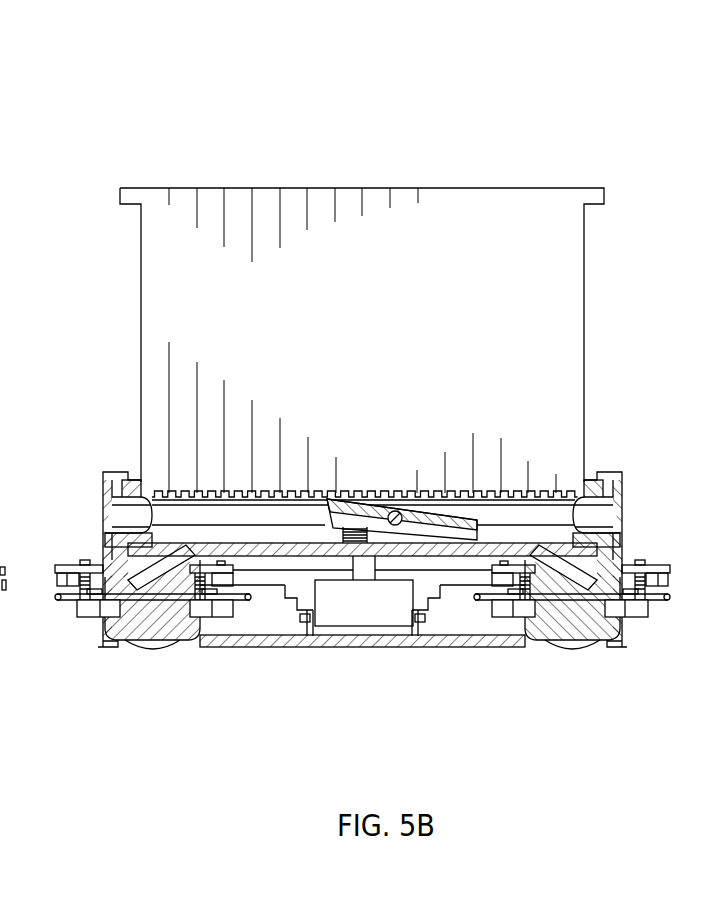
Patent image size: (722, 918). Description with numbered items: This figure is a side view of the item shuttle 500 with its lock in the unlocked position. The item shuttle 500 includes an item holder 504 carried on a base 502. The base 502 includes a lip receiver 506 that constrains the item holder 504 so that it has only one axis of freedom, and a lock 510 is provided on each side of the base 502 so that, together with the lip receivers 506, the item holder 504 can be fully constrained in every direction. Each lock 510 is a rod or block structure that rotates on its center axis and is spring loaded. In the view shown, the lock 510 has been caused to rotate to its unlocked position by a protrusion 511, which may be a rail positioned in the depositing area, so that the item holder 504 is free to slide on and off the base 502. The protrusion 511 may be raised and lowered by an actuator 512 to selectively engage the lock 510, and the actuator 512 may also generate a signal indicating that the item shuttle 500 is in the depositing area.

The item shuttle 500 is at (372, 86).
The base 502 is at (103, 503).
The item holder 504 is at (141, 343).
The lip receiver 506 is at (614, 473).
The lock 510 is at (375, 448).
The protrusion 511 is at (253, 558).
The actuator 512 is at (355, 602).